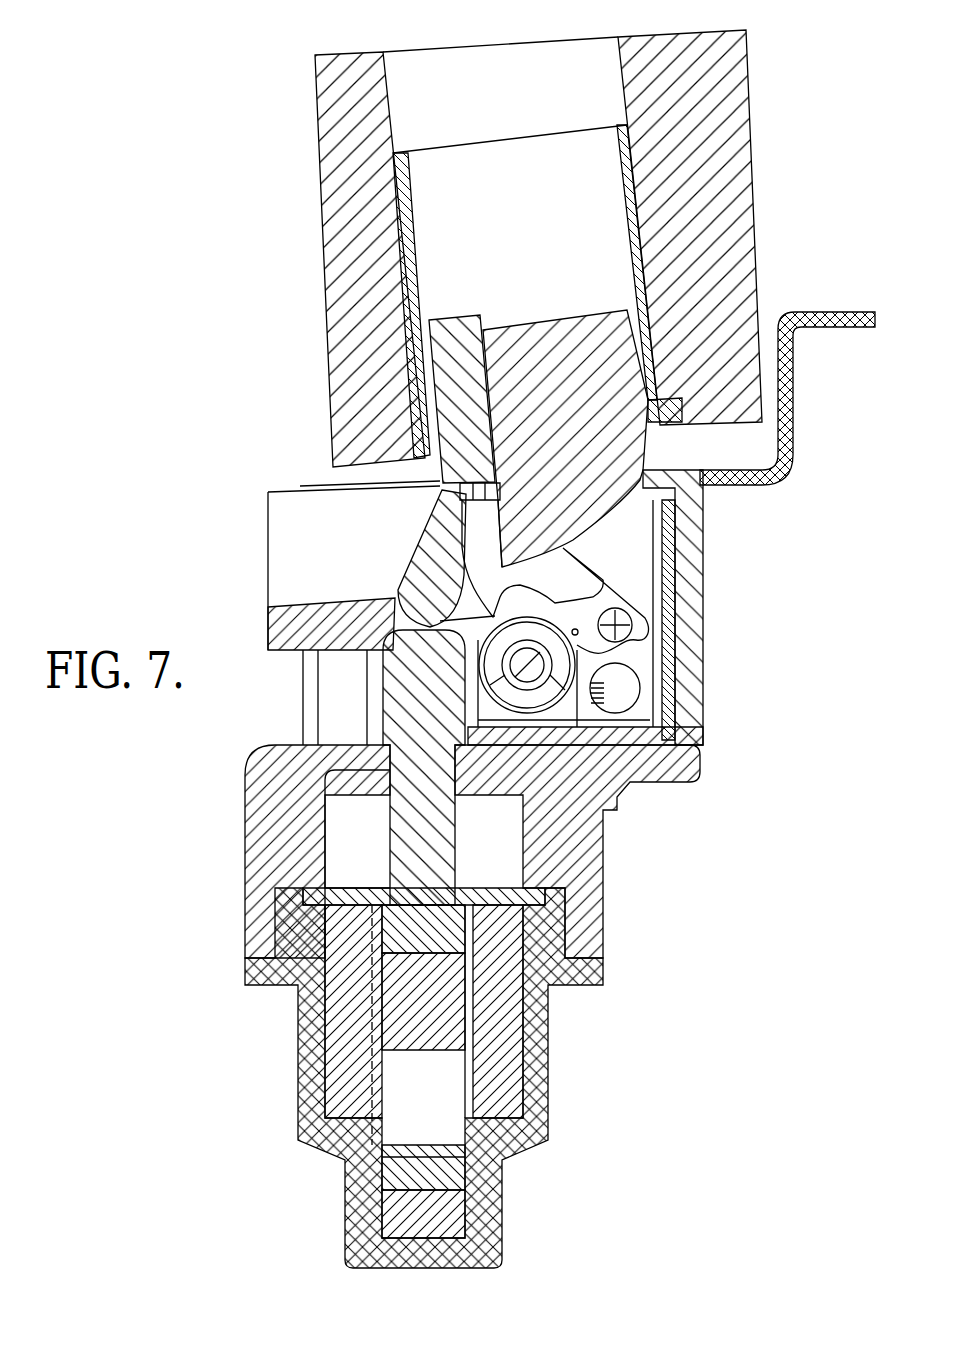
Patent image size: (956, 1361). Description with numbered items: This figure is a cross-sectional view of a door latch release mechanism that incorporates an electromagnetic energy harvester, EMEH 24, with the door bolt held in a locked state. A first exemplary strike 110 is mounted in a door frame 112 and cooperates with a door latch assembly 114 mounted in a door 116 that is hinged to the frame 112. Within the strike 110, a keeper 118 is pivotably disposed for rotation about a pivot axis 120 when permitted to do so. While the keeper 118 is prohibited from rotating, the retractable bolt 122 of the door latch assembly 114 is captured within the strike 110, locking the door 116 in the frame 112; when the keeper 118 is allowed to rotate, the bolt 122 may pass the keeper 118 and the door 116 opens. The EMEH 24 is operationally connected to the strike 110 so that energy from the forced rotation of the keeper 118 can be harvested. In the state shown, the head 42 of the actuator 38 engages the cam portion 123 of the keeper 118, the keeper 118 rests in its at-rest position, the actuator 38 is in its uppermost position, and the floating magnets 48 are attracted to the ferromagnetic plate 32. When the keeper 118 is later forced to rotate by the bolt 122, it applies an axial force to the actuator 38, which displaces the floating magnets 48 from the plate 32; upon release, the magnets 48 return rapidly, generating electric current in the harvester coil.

The door latch assembly 114 is at (660, 274).
The door 116 is at (760, 262).
The door frame 112 is at (795, 418).
The strike 110 is at (778, 558).
The keeper 118 is at (417, 539).
The retractable bolt 122 is at (565, 547).
The cam portion 123 is at (415, 572).
The pivot axis 120 is at (628, 630).
The head 42 is at (383, 680).
The actuator 38 is at (385, 803).
The ferromagnetic plate 32 is at (548, 896).
The EMEH 24 is at (715, 1037).
The floating magnets 48 is at (403, 1040).